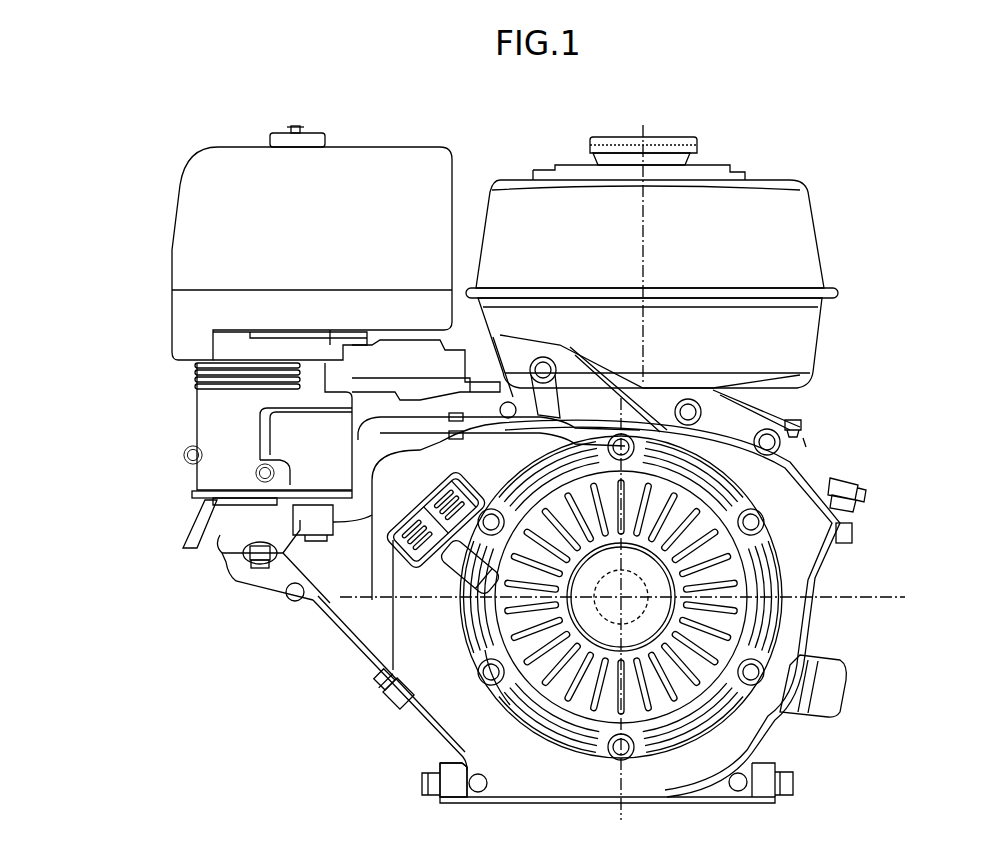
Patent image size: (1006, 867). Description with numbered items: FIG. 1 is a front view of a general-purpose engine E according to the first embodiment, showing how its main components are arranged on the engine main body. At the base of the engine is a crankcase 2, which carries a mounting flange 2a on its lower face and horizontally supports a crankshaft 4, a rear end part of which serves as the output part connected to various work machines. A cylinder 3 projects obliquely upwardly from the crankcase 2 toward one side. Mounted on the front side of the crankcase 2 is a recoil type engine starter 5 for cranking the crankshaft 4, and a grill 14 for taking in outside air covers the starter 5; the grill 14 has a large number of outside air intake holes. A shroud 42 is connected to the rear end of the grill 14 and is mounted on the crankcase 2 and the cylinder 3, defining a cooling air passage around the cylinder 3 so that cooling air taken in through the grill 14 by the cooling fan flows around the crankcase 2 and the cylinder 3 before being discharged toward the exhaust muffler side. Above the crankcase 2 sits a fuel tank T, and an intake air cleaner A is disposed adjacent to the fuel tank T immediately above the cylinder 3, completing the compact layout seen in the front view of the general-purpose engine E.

The intake air cleaner A is at (302, 244).
The fuel tank T is at (797, 226).
The general-purpose engine E is at (561, 577).
The crankcase 2 is at (137, 457).
The mounting flange 2a is at (455, 763).
The cylinder 3 is at (252, 578).
The crankshaft 4 is at (783, 568).
The recoil type engine starter 5 is at (452, 556).
The grill 14 is at (540, 668).
The shroud 42 is at (323, 575).